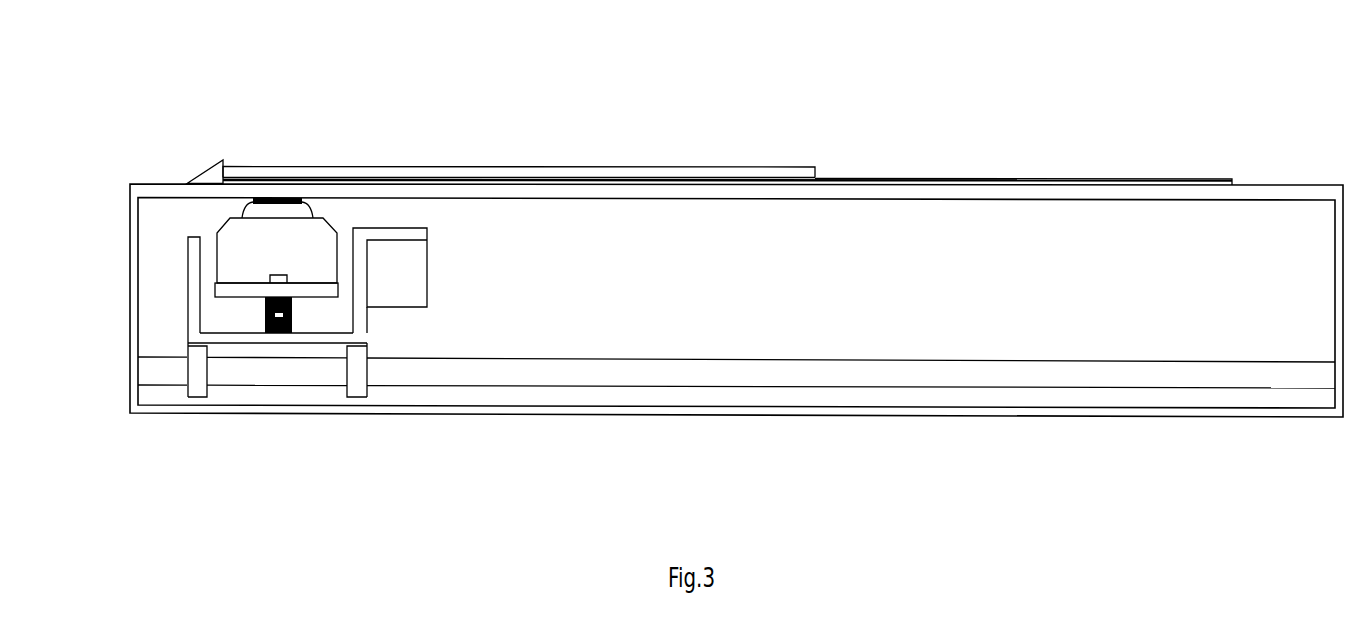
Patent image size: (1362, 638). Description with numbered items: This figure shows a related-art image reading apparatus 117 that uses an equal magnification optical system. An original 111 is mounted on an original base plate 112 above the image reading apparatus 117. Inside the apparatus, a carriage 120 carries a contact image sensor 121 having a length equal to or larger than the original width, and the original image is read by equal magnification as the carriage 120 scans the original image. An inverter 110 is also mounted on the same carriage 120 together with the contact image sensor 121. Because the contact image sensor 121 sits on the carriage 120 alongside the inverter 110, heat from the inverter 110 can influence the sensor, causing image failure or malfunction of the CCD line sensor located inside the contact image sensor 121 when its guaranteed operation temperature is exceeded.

The inverter 110 is at (392, 267).
The original 111 is at (490, 172).
The original base plate 112 is at (860, 193).
The image reading apparatus 117 is at (563, 305).
The carriage 120 is at (192, 315).
The contact image sensor 121 is at (267, 245).